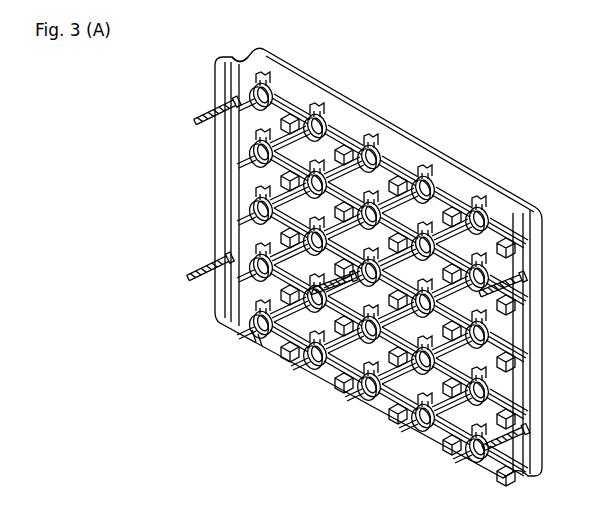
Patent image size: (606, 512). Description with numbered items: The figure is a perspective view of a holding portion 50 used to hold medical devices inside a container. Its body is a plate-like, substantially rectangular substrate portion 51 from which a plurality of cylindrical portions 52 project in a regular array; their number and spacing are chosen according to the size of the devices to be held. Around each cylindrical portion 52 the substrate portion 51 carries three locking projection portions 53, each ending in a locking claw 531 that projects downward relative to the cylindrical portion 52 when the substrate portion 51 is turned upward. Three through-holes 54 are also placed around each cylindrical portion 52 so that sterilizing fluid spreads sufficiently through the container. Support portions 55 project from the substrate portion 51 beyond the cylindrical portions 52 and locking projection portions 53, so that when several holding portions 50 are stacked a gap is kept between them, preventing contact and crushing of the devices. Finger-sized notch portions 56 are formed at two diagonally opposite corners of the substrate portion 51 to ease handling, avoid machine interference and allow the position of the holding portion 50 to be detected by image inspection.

The holding portion 50 is at (478, 97).
The substrate portion 51 is at (503, 208).
The cylindrical portion 52 is at (278, 92).
The locking projection portion 53 is at (369, 130).
The locking claw 531 is at (258, 347).
The through-hole 54 is at (328, 112).
The support portion 55 is at (197, 112).
The notch portion 56 is at (234, 56).